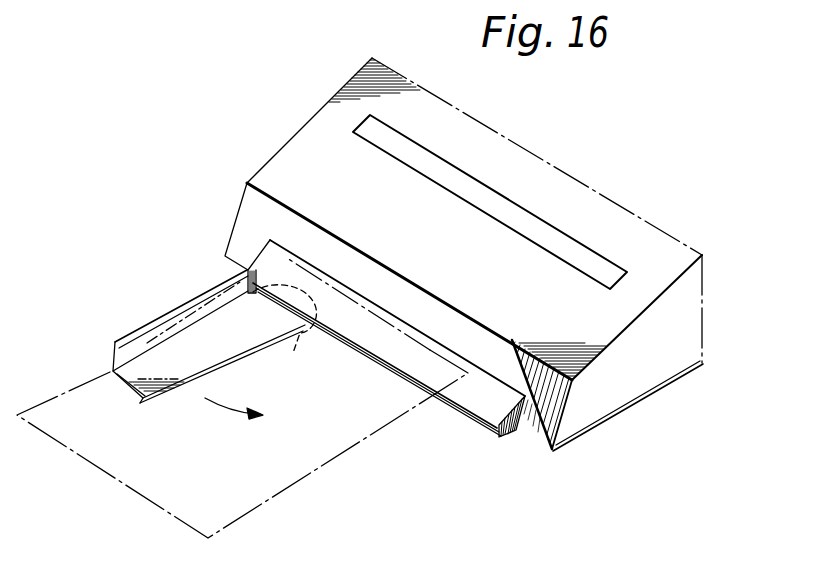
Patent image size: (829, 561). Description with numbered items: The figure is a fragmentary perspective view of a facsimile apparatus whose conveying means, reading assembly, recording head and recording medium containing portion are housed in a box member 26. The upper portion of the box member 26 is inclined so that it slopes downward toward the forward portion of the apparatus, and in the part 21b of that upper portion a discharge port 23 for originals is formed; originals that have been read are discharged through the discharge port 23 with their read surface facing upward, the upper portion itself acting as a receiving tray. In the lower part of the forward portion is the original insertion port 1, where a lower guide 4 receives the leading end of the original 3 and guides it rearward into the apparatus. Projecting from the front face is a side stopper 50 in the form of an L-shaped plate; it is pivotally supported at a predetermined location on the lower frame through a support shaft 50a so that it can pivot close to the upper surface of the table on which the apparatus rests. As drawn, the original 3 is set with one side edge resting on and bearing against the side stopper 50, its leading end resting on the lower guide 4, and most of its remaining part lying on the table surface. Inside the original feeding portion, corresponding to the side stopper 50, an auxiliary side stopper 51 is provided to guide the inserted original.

The original insertion port 1 is at (405, 327).
The part of the upper portion 21b is at (608, 218).
The discharge port for originals 23 is at (492, 203).
The box member 26 is at (635, 385).
The lower guide 4 is at (477, 423).
The auxiliary side stopper 51 is at (265, 260).
The side stopper 50 is at (152, 334).
The support shaft 50a is at (297, 345).
The original 3 is at (310, 462).